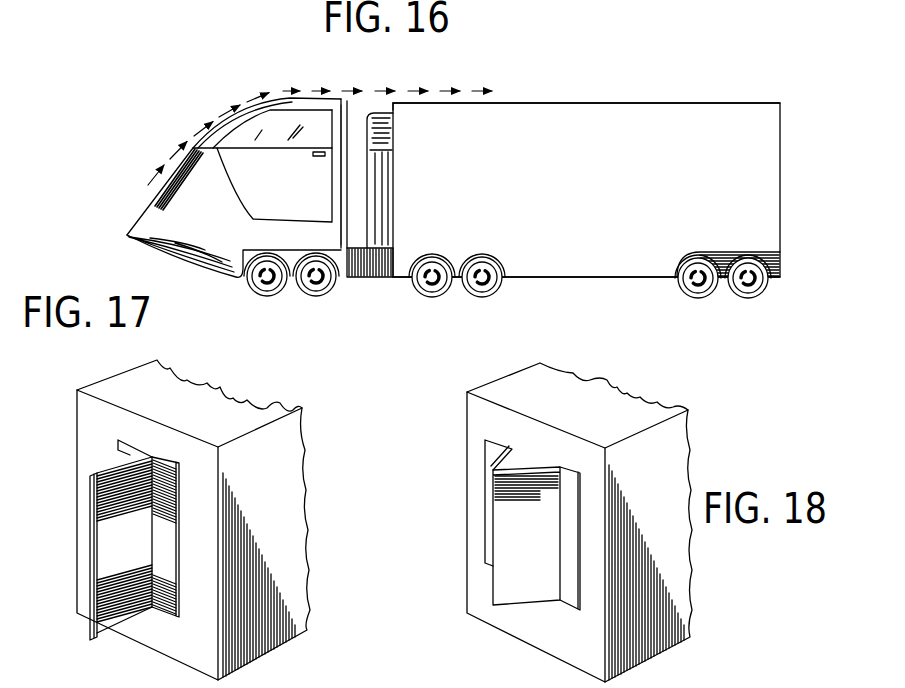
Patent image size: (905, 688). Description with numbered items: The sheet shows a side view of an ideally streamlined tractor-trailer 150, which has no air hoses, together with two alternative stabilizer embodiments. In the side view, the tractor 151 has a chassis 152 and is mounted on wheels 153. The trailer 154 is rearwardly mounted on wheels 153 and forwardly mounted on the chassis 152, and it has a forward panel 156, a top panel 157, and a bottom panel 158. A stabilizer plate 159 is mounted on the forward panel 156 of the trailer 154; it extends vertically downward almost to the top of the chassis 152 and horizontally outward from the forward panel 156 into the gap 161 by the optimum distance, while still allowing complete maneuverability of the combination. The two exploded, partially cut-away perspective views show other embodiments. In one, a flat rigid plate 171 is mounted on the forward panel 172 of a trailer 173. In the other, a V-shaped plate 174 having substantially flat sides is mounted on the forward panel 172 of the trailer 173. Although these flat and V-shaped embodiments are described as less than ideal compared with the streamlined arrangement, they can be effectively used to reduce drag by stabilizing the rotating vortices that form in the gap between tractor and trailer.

In FIG. 16, the ideally streamlined tractor-trailer 150 is at (280, 86).
In FIG. 16, the tractor 151 is at (306, 196).
In FIG. 16, the chassis 152 is at (360, 278).
In FIG. 16, the wheels 153 is at (318, 298).
In FIG. 16, the trailer 154 is at (727, 78).
In FIG. 16, the forward panel 156 is at (390, 103).
In FIG. 16, the top panel 157 is at (611, 103).
In FIG. 16, the bottom panel 158 is at (590, 278).
In FIG. 16, the stabilizer plate 159 is at (372, 181).
In FIG. 16, the gap 161 is at (363, 117).
In FIG. 17, the flat rigid plate 171 is at (136, 549).
In FIG. 17, the forward panel 172 is at (210, 650).
In FIG. 18, the forward panel 172 is at (580, 641).
In FIG. 17, the trailer 173 is at (150, 652).
In FIG. 18, the trailer 173 is at (532, 627).
In FIG. 18, the V-shaped plate 174 is at (540, 568).